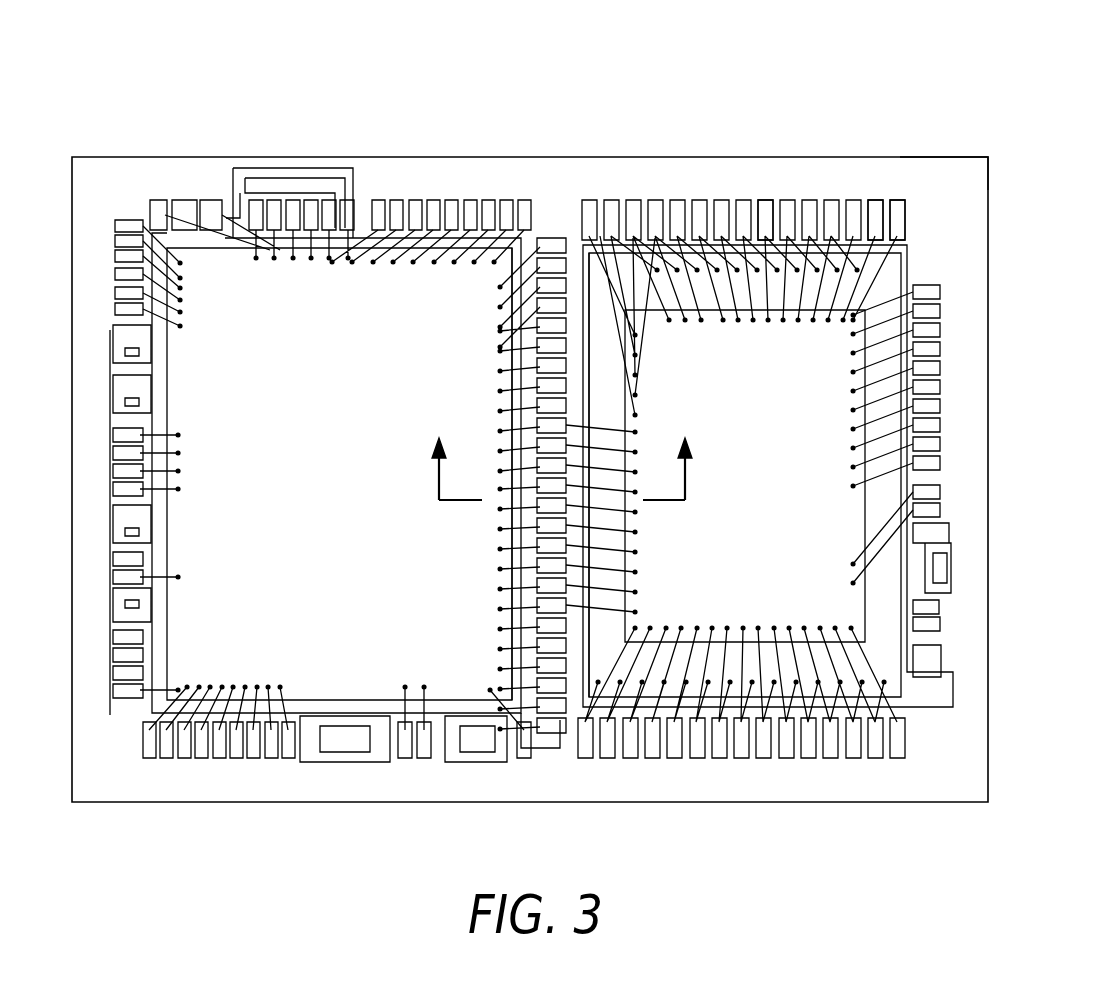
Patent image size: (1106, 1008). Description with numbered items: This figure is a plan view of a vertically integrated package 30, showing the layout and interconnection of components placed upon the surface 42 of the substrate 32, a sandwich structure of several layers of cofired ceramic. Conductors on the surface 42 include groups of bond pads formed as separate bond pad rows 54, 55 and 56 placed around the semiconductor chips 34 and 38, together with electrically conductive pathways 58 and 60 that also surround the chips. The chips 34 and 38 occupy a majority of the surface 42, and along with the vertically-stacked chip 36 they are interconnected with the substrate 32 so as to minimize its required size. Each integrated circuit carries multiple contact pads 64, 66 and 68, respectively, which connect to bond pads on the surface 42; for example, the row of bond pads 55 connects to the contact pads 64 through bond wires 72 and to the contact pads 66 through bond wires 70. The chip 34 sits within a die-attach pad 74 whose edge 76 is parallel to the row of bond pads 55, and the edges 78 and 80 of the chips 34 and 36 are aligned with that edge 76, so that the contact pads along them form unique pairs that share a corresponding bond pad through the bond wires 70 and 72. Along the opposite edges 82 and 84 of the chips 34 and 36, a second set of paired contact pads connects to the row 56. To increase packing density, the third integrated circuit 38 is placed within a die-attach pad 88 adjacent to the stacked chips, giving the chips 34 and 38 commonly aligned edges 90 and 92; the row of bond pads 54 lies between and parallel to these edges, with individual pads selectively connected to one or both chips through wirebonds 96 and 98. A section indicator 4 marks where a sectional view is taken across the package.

The multichip module assembly 30 is at (855, 97).
The substrate 32 is at (932, 155).
The semiconductor chip 34 is at (893, 300).
The vertically-stacked chip 36 is at (810, 540).
The third integrated circuit 38 is at (232, 307).
The surface of the substrate 42 is at (965, 170).
The row of bond pads 54 is at (555, 217).
The row of bond pads 55 is at (582, 150).
The row of bond pads 56 is at (578, 765).
The electrically conductive pathway 58 is at (520, 770).
The electrically conductive pathway 60 is at (355, 170).
The contact pads 64 is at (620, 265).
The contact pads 66 is at (790, 300).
The contact pads 68 is at (505, 660).
The bond wires 70 is at (720, 290).
The bond wires 72 is at (905, 212).
The die-attach pad 74 is at (578, 715).
The edge of the die-attach pad 76 is at (905, 228).
The edge of chip 34 78 is at (890, 300).
The edge of chip 36 80 is at (885, 300).
The opposite edge of chip 34 82 is at (872, 652).
The opposite edge of chip 36 84 is at (898, 672).
The die-attach pad 88 is at (153, 713).
The edge of chip 34 90 is at (590, 378).
The edge of chip 38 92 is at (512, 395).
The wirebonds 96 is at (605, 490).
The wirebonds 98 is at (505, 580).
The section line for FIG. 4 is at (560, 451).